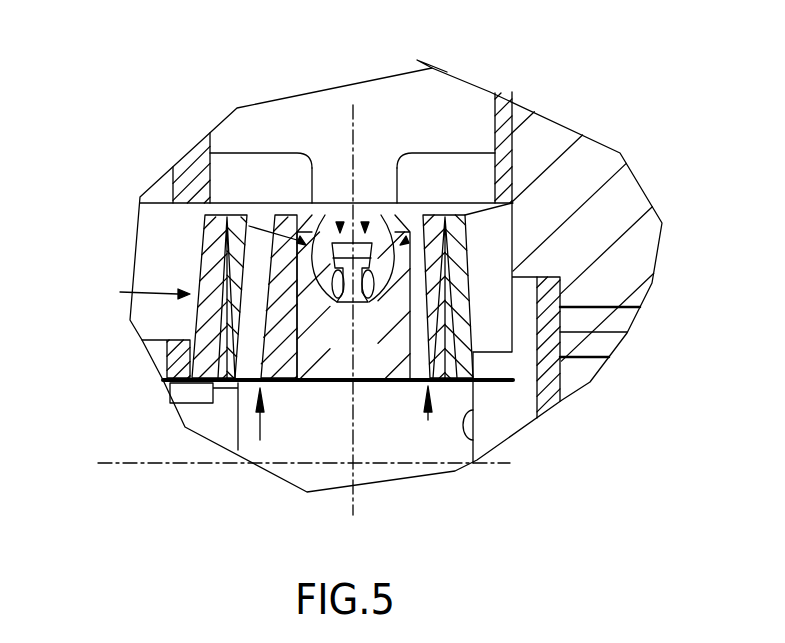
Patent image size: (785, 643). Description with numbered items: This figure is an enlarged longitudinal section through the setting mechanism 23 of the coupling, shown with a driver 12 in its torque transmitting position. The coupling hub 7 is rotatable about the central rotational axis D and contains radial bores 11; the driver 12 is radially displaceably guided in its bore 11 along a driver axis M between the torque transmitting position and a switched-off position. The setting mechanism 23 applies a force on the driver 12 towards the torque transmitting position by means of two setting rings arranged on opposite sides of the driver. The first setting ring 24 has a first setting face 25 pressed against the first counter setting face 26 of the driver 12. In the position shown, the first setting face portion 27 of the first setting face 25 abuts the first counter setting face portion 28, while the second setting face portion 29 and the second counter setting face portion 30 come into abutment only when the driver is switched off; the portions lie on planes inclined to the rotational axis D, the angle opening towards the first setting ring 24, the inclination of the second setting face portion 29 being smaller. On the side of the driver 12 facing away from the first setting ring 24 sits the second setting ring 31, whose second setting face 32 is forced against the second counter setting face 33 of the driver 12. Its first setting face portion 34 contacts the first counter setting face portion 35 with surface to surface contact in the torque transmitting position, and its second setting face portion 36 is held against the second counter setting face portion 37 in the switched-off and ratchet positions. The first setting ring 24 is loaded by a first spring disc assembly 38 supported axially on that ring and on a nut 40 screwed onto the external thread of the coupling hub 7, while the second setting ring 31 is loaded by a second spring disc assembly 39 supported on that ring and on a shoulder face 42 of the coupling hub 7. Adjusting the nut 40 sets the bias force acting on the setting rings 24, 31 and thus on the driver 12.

The coupling hub 7 is at (632, 198).
The radial bore 11 is at (497, 94).
The driver 12 is at (276, 110).
The setting mechanism 23 is at (120, 292).
The first setting ring 24 is at (322, 381).
The first setting face 25 is at (340, 228).
The first counter setting face 26 is at (194, 381).
The first setting face portion 27 is at (302, 240).
The first counter setting face portion 28 is at (335, 280).
The second setting face portion 29 is at (316, 296).
The second counter setting face portion 30 is at (310, 193).
The second setting ring 31 is at (382, 381).
The second setting face 32 is at (365, 228).
The second counter setting face 33 is at (458, 382).
The first setting face portion 34 is at (404, 240).
The first counter setting face portion 35 is at (372, 280).
The second setting face portion 36 is at (388, 296).
The second counter setting face portion 37 is at (398, 193).
The first spring disc assembly 38 is at (260, 440).
The second spring disc assembly 39 is at (428, 420).
The nut 40 is at (168, 355).
The shoulder face 42 is at (482, 458).
The rotational axis D is at (105, 463).
The driver axis M is at (355, 115).